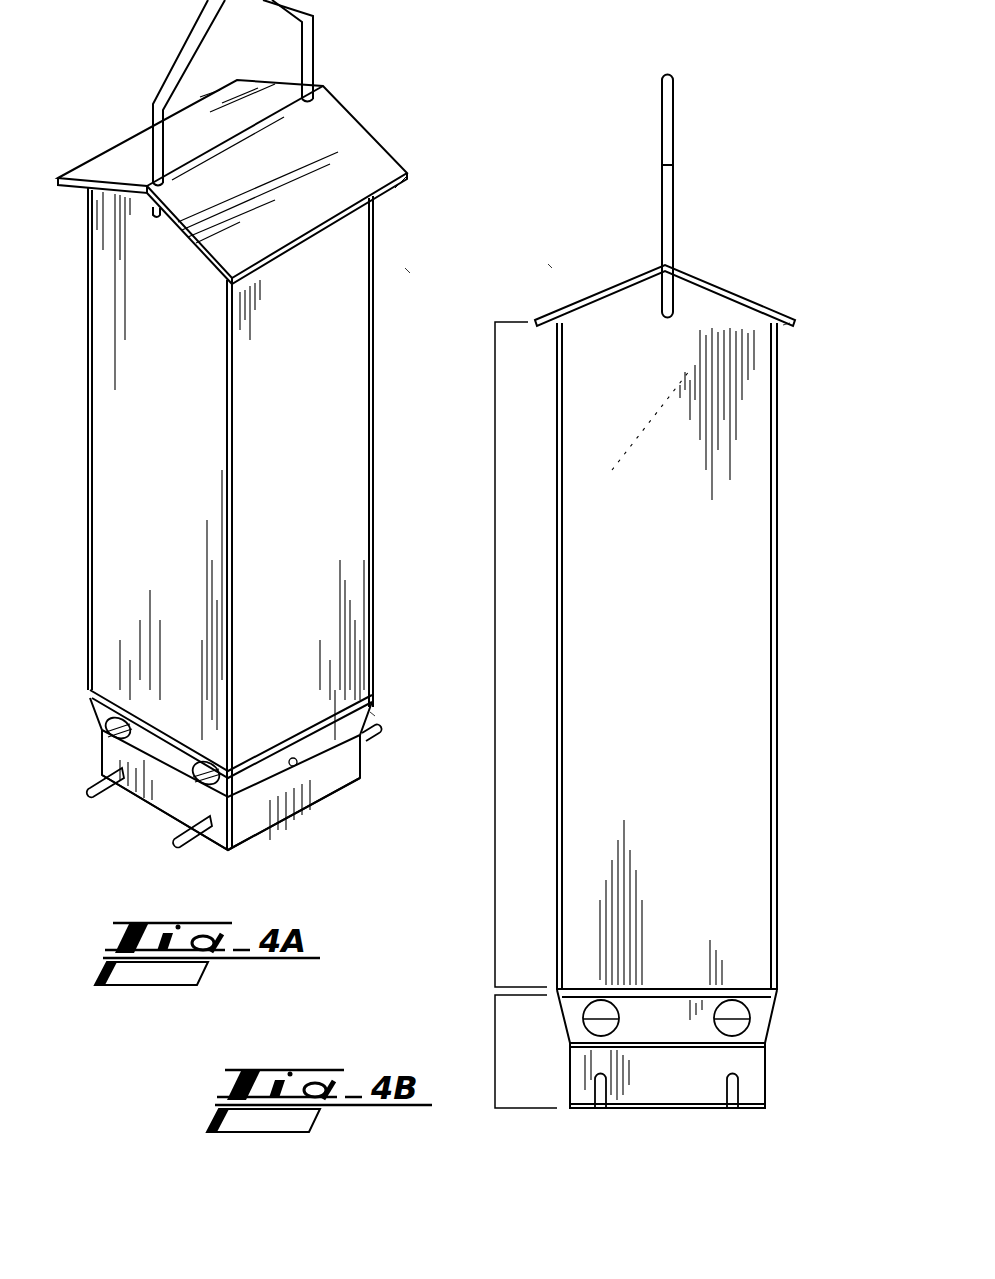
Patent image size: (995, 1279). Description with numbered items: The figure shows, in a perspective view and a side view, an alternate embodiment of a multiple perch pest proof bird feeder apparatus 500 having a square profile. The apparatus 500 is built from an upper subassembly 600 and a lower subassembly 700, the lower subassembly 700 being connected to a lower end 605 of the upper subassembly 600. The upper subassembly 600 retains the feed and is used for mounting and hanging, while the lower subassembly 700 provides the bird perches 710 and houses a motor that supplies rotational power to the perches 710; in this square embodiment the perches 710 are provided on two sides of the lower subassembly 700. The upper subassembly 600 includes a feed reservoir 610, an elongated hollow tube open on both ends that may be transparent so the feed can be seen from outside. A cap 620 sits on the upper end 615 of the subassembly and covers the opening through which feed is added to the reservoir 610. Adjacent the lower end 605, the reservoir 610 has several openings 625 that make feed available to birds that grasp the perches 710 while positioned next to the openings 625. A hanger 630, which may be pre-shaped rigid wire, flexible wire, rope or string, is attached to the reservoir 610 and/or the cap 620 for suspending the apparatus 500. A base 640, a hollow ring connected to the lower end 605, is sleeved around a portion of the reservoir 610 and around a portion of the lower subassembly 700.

In FIG. 4A, the multiple perch pest proof bird feeder apparatus 500 is at (400, 280).
In FIG. 4B, the multiple perch pest proof bird feeder apparatus 500 is at (548, 265).
In FIG. 4A, the upper subassembly 600 is at (372, 711).
In FIG. 4B, the upper subassembly 600 is at (495, 686).
In FIG. 4A, the lower end 605 is at (266, 774).
In FIG. 4B, the lower end 605 is at (783, 1017).
In FIG. 4A, the feed reservoir 610 is at (323, 464).
In FIG. 4B, the feed reservoir 610 is at (693, 683).
In FIG. 4A, the upper end 615 is at (380, 202).
In FIG. 4B, the upper end 615 is at (785, 328).
In FIG. 4A, the cap 620 is at (333, 146).
In FIG. 4B, the cap 620 is at (735, 292).
In FIG. 4A, the openings 625 is at (104, 723).
In FIG. 4B, the openings 625 is at (587, 1005).
In FIG. 4A, the hanger 630 is at (173, 68).
In FIG. 4B, the hanger 630 is at (673, 108).
In FIG. 4A, the base 640 is at (305, 792).
In FIG. 4B, the base 640 is at (690, 1100).
In FIG. 4B, the lower subassembly 700 is at (495, 1043).
In FIG. 4A, the perches 710 is at (107, 792).
In FIG. 4B, the perches 710 is at (596, 1081).